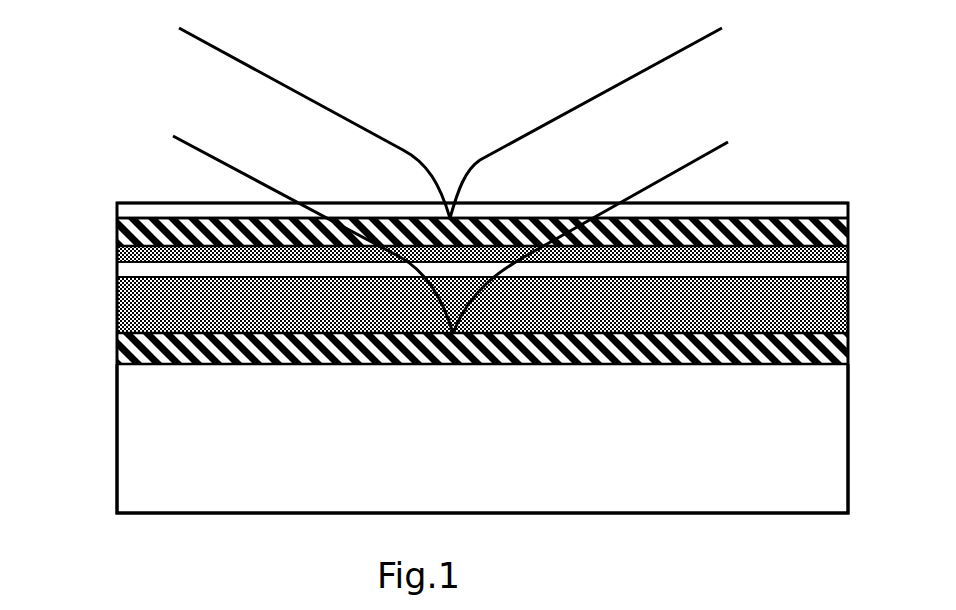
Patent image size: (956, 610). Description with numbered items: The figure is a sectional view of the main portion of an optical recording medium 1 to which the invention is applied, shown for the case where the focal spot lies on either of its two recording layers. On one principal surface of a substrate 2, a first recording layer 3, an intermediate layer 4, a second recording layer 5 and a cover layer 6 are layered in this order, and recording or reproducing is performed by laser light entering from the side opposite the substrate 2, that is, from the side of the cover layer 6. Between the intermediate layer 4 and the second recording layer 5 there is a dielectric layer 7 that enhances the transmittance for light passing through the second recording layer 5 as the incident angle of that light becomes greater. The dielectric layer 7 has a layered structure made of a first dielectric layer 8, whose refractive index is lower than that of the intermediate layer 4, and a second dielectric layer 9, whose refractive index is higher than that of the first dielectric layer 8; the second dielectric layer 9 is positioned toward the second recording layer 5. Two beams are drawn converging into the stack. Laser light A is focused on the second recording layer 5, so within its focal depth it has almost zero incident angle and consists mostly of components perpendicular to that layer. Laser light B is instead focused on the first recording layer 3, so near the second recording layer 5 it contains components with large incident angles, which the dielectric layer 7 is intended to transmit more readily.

The optical recording medium 1 is at (127, 127).
The substrate 2 is at (135, 437).
The first recording layer 3 is at (117, 355).
The intermediate layer 4 is at (117, 303).
The second recording layer 5 is at (117, 231).
The cover layer 6 is at (117, 208).
The dielectric layer 7 is at (55, 247).
The first dielectric layer 8 is at (117, 268).
The second dielectric layer 9 is at (117, 257).
The laser light A is at (690, 48).
The laser light B is at (715, 152).